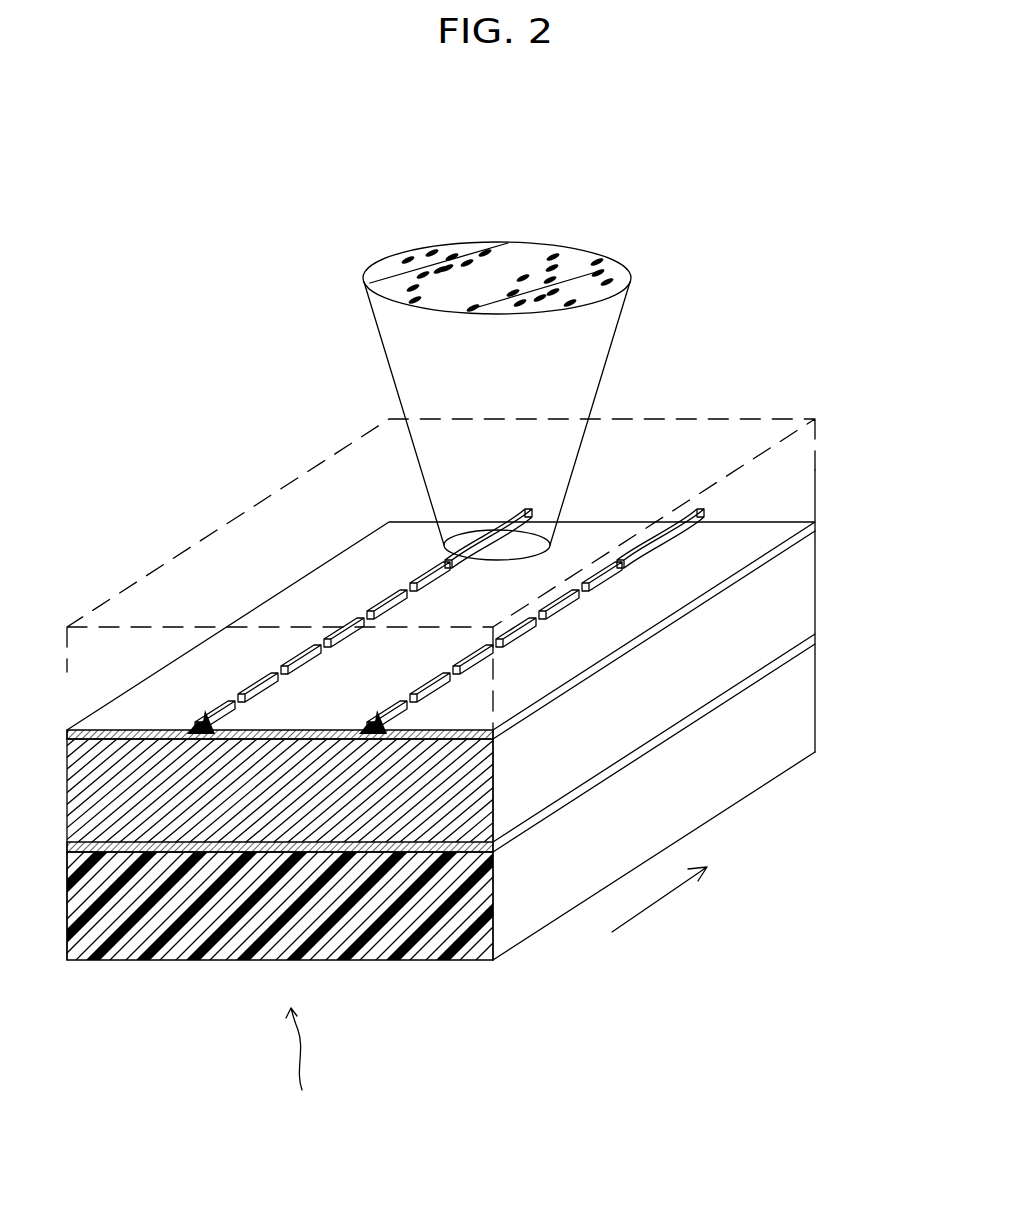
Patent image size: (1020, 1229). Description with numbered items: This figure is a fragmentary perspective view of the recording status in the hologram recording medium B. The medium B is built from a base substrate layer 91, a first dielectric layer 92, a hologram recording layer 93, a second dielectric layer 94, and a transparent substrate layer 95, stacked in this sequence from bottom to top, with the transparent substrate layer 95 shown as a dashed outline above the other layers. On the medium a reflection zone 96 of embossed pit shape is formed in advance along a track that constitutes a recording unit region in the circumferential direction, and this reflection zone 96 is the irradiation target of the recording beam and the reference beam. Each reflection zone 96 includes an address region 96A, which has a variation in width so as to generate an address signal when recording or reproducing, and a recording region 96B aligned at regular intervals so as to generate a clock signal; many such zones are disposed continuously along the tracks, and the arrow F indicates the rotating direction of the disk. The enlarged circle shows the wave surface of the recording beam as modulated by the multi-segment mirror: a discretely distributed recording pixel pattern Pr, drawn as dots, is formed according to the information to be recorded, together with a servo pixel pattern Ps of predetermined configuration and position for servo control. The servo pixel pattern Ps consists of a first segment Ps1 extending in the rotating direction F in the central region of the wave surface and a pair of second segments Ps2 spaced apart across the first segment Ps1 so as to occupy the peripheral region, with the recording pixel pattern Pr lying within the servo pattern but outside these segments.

The base substrate layer 91 is at (792, 755).
The first dielectric layer 92 is at (768, 673).
The hologram recording layer 93 is at (797, 623).
The second dielectric layer 94 is at (788, 543).
The transparent substrate layer 95 is at (815, 478).
The reflection zone 96 is at (381, 588).
The address region 96A is at (443, 557).
The recording region 96B is at (377, 600).
The servo pixel pattern Ps is at (497, 251).
The first segment Ps1 is at (525, 258).
The second segments Ps2 is at (390, 263).
The recording pixel pattern Pr is at (395, 290).
The rotating direction F is at (659, 900).
The hologram recording medium B is at (297, 1063).